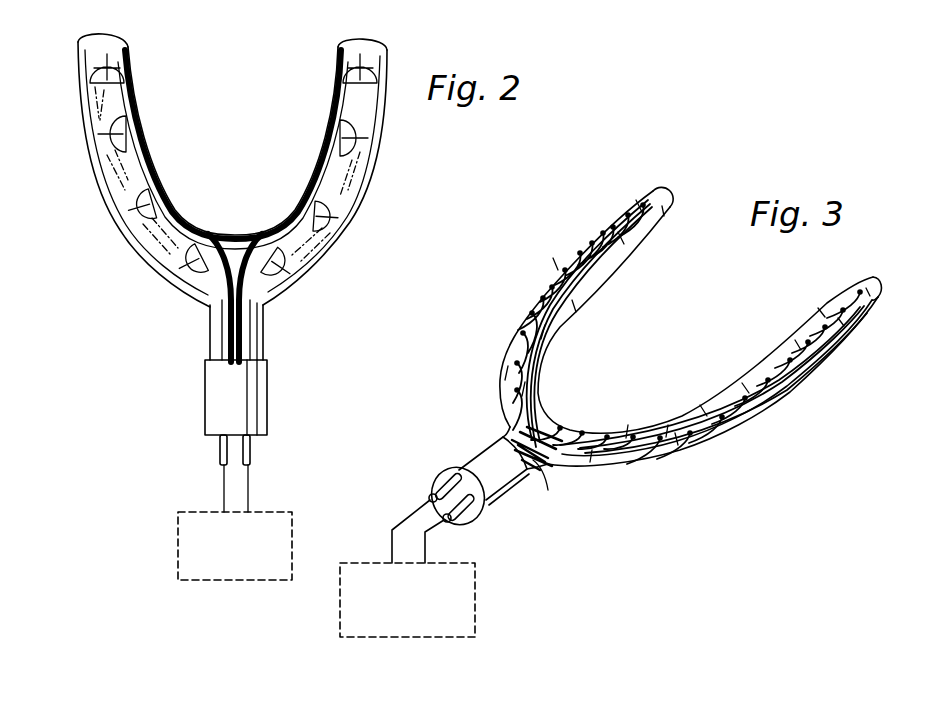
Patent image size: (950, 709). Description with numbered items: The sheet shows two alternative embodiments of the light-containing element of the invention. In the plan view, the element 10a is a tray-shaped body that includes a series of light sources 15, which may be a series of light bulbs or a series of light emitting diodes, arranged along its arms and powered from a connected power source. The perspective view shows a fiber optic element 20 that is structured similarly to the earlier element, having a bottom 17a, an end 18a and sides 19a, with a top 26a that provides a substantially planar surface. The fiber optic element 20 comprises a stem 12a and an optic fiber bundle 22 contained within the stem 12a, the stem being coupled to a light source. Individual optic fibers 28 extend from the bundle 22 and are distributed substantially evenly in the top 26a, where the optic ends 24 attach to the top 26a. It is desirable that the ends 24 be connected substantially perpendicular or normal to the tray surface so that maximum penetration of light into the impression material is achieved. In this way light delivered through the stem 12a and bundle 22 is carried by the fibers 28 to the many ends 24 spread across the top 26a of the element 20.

In FIG. 2, the element 10a is at (166, 299).
In FIG. 2, the light sources 15 is at (334, 226).
In FIG. 3, the stem 12a is at (504, 432).
In FIG. 3, the bottom 17a is at (700, 434).
In FIG. 3, the end 18a is at (875, 288).
In FIG. 3, the sides 19a is at (820, 370).
In FIG. 3, the fiber optic element 20 is at (619, 401).
In FIG. 3, the optic fiber bundle 22 is at (536, 463).
In FIG. 3, the optic ends 24 is at (654, 192).
In FIG. 3, the top 26a is at (838, 299).
In FIG. 3, the optic fibers 28 is at (585, 261).